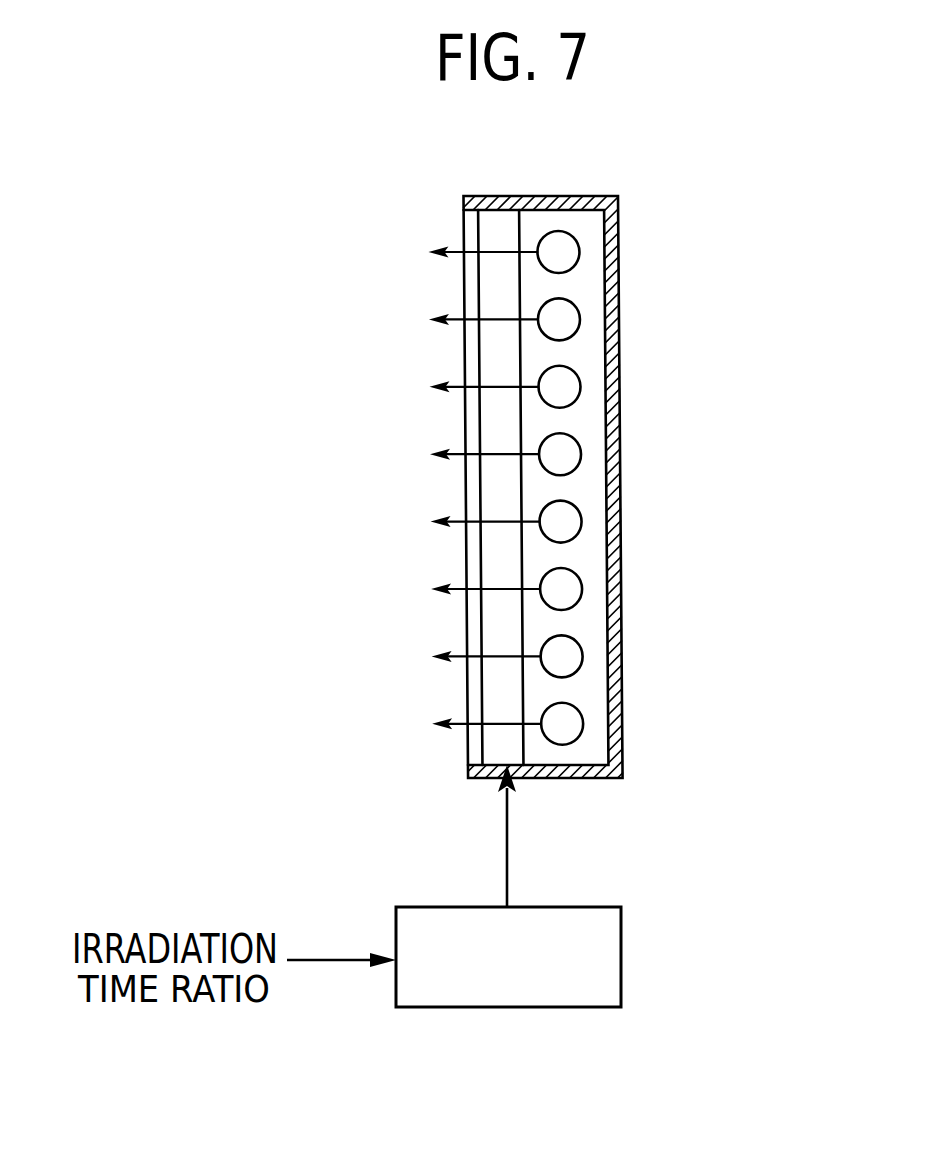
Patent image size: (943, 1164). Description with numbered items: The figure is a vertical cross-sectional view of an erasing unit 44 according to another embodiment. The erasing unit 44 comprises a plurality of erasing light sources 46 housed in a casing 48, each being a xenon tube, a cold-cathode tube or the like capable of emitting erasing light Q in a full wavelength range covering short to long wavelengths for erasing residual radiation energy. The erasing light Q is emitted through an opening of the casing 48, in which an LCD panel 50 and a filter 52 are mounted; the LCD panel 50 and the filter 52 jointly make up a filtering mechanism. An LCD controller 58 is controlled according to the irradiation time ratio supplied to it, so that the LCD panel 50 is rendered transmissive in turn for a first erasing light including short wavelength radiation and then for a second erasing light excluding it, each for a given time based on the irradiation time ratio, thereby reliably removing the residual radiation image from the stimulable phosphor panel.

The erasing unit 44 is at (559, 452).
The erasing light sources 46 is at (557, 385).
The casing 48 is at (620, 659).
The LCD panel 50 is at (495, 227).
The filter 52 is at (470, 361).
The LCD controller 58 is at (595, 906).
The erasing light Q is at (456, 248).